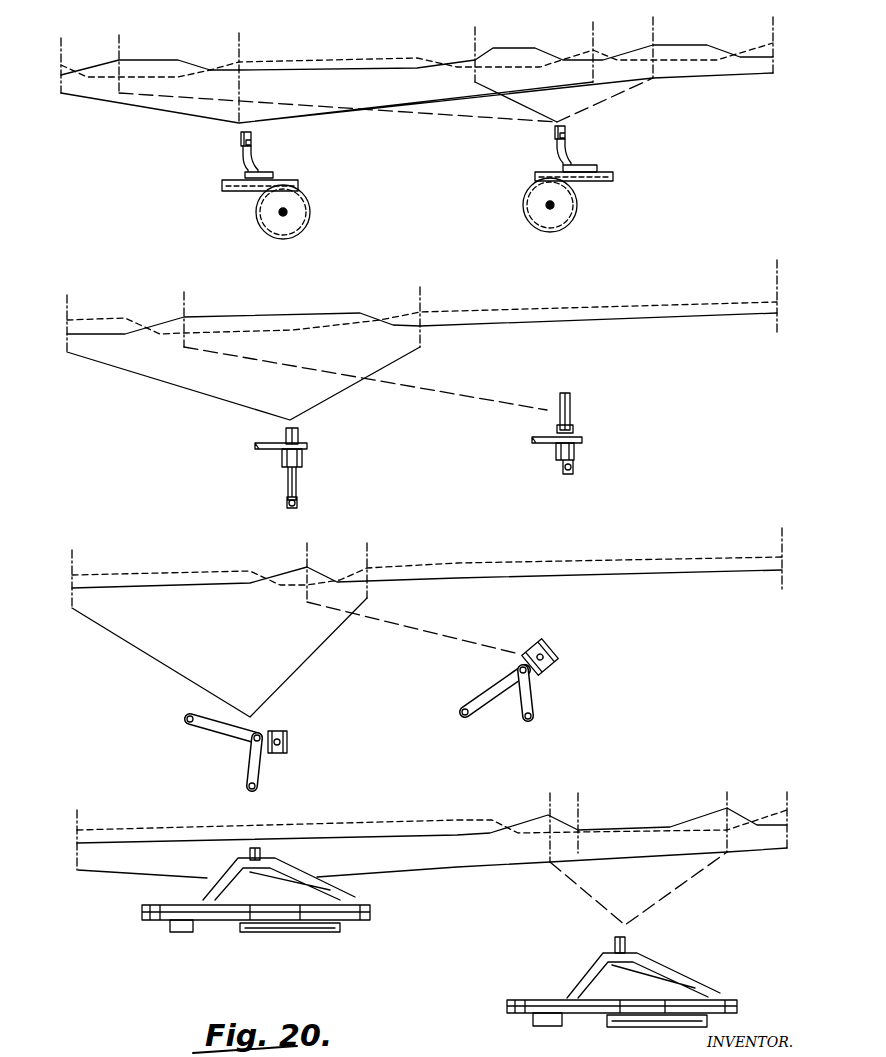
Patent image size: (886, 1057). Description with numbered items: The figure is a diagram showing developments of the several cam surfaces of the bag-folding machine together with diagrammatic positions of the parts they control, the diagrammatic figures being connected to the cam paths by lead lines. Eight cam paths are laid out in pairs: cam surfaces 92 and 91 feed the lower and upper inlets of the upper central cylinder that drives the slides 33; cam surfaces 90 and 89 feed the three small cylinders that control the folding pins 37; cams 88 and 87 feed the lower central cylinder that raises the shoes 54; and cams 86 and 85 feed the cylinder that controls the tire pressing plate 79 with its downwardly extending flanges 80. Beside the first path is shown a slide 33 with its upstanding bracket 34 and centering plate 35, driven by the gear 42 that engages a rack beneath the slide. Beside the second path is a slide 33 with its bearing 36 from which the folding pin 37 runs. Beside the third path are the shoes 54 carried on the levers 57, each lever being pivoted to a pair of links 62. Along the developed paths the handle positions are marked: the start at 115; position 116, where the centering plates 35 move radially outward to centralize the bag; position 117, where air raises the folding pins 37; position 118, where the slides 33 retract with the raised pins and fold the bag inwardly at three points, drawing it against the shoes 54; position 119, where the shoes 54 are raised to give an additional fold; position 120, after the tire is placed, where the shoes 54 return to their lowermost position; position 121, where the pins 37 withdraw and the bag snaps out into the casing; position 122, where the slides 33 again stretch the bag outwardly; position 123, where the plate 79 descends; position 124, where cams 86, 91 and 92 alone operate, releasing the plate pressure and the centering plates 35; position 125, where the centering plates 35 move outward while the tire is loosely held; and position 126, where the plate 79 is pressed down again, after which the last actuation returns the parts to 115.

The slide 33 is at (222, 183).
The upstanding bracket 34 is at (257, 162).
The centering plate 35 is at (253, 140).
The bearing 36 is at (302, 460).
The folding pin 37 is at (298, 437).
The gear 42 is at (300, 210).
The shoe 54 is at (287, 740).
The lever 57 is at (208, 727).
The link 62 is at (258, 768).
The tire pressing plate 79 is at (370, 908).
The downwardly extending flange 80 is at (273, 930).
The cam 85 is at (163, 830).
The cam 86 is at (417, 833).
The cam 87 is at (453, 563).
The cam 88 is at (165, 587).
The cam surface 89 is at (293, 328).
The cam surface 90 is at (220, 315).
The cam surface 91 is at (333, 55).
The cam surface 92 is at (140, 60).
The start position 115 is at (57, 90).
The first actuation position 116 is at (112, 80).
The second actuation position 117 is at (184, 300).
The third actuation position 118 is at (240, 78).
The fourth actuation position 119 is at (307, 550).
The fifth actuation position 120 is at (367, 550).
The sixth actuation position 121 is at (420, 287).
The seventh actuation position 122 is at (475, 27).
The eighth actuation position 123 is at (550, 797).
The ninth actuation position 124 is at (593, 33).
The tenth actuation position 125 is at (653, 23).
The eleventh actuation position 126 is at (727, 797).